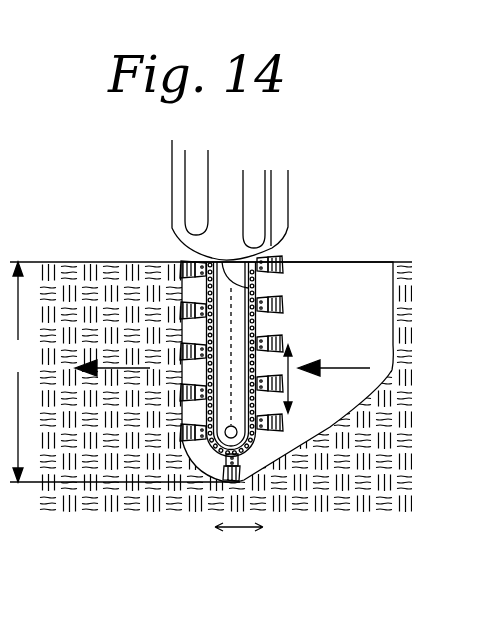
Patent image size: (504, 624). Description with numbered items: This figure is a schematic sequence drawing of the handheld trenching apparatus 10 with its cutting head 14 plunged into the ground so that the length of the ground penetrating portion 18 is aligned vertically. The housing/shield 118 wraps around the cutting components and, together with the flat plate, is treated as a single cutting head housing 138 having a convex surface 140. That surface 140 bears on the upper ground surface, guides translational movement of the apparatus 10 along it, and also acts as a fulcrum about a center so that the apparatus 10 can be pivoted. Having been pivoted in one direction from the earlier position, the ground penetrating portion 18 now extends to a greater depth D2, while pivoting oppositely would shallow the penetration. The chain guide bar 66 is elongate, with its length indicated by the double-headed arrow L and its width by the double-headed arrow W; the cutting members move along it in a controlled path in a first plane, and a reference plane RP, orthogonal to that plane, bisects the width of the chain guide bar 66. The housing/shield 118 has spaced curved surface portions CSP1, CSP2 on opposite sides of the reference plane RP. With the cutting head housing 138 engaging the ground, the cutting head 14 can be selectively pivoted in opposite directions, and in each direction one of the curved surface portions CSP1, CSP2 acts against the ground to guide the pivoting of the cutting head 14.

The handheld trenching apparatus 10 is at (246, 130).
The cutting head 14 is at (163, 215).
The housing/shield 118 is at (233, 210).
The cutting head housing 138 is at (235, 237).
The convex surface 140 is at (258, 292).
The chain guide bar 66 is at (225, 340).
The ground penetrating portion 18 is at (247, 466).
The curved surface portion CSP1 is at (275, 258).
The curved surface portion CSP2 is at (185, 256).
The reference plane RP is at (232, 348).
The length L is at (296, 383).
The depth D2 is at (123, 372).
The width W is at (240, 532).